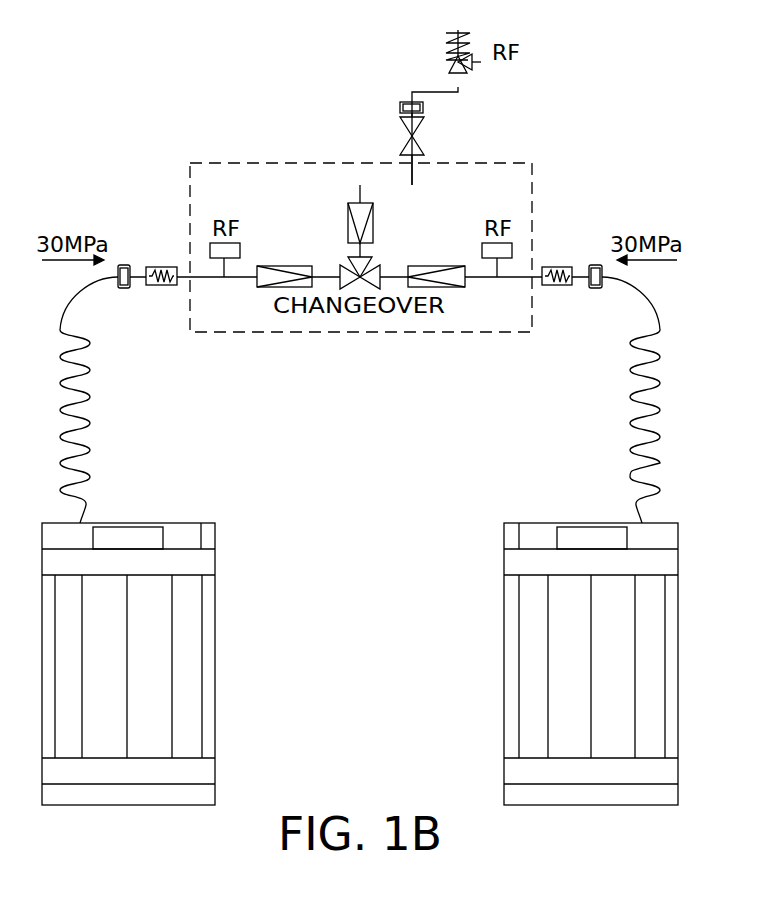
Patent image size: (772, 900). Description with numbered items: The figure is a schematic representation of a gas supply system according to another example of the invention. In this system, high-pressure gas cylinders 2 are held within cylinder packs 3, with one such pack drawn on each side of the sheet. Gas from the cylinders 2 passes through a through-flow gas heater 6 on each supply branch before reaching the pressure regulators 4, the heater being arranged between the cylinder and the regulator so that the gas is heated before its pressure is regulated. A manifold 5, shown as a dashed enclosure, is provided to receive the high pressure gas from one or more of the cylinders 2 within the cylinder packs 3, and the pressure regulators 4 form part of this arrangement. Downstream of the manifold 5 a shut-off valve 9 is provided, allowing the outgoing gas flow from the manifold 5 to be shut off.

The high-pressure gas cylinder 2 is at (165, 628).
The cylinder pack 3 is at (215, 585).
The pressure regulator 4 is at (373, 220).
The manifold 5 is at (236, 163).
The through-flow gas heater 6 is at (161, 267).
The shut-off valve 9 is at (405, 139).